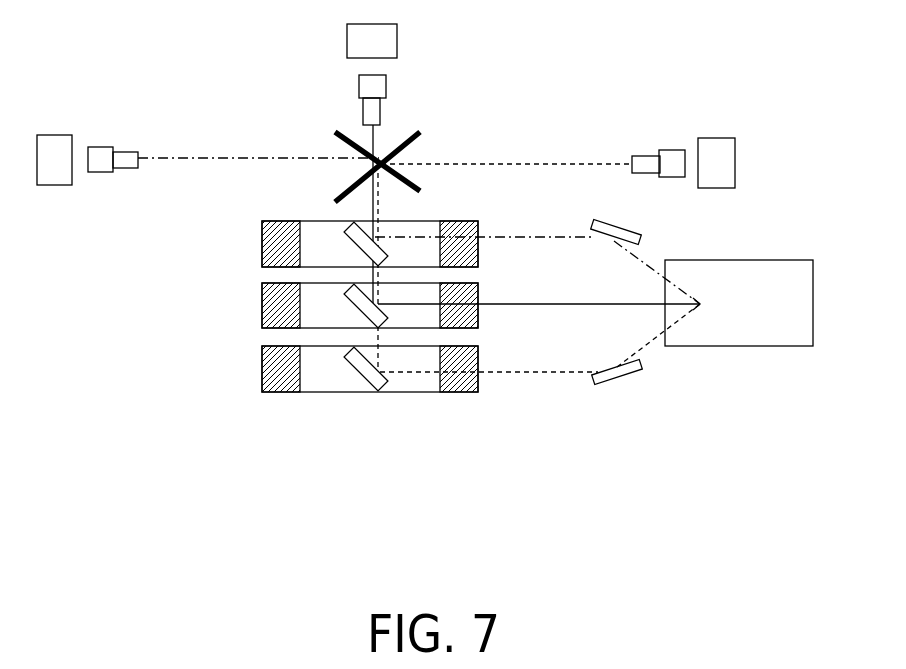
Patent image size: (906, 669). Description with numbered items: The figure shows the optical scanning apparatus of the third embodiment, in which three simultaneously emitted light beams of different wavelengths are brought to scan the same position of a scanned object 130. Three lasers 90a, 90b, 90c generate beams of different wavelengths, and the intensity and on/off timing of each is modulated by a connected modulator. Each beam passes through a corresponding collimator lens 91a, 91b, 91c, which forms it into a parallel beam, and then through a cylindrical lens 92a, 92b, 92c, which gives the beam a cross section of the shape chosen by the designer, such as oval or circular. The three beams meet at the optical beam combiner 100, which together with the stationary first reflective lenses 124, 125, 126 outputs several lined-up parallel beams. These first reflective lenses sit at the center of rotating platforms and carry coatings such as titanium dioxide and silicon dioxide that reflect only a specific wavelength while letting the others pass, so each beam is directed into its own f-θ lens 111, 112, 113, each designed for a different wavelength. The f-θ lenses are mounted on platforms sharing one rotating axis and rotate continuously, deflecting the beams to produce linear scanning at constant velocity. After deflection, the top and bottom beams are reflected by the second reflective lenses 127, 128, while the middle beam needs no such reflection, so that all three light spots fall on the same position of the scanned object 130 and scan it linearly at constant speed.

The laser 90a is at (713, 148).
The laser 90b is at (388, 38).
The laser 90c is at (52, 178).
The collimator lens 91a is at (678, 158).
The collimator lens 91b is at (378, 80).
The collimator lens 91c is at (102, 167).
The cylindrical lens 92a is at (652, 160).
The cylindrical lens 92b is at (376, 108).
The cylindrical lens 92c is at (125, 167).
The optical beam combiner 100 is at (335, 133).
The f-θ lens 111 is at (478, 257).
The f-θ lens 112 is at (478, 318).
The f-θ lens 113 is at (478, 382).
The first reflective lens 124 is at (343, 235).
The first reflective lens 125 is at (350, 305).
The first reflective lens 126 is at (362, 373).
The second reflective lens 127 is at (623, 227).
The second reflective lens 128 is at (623, 375).
The scanned object 130 is at (808, 317).